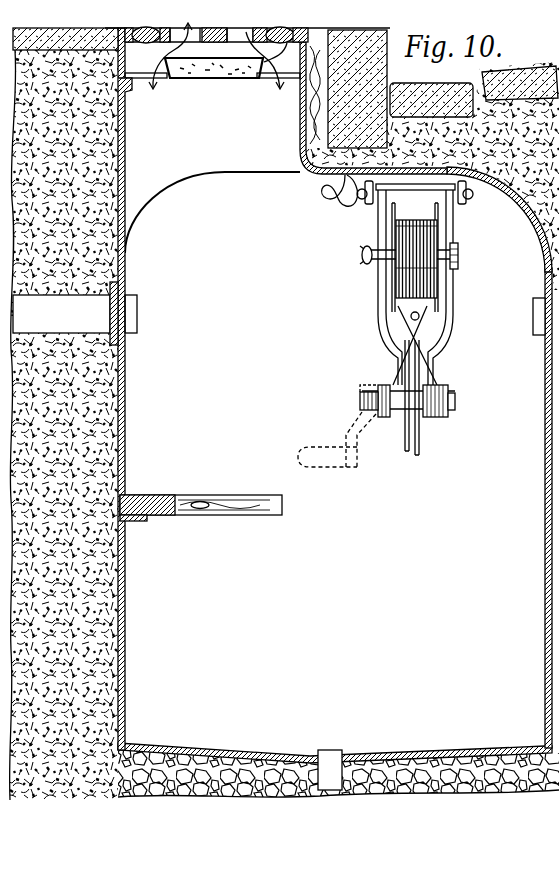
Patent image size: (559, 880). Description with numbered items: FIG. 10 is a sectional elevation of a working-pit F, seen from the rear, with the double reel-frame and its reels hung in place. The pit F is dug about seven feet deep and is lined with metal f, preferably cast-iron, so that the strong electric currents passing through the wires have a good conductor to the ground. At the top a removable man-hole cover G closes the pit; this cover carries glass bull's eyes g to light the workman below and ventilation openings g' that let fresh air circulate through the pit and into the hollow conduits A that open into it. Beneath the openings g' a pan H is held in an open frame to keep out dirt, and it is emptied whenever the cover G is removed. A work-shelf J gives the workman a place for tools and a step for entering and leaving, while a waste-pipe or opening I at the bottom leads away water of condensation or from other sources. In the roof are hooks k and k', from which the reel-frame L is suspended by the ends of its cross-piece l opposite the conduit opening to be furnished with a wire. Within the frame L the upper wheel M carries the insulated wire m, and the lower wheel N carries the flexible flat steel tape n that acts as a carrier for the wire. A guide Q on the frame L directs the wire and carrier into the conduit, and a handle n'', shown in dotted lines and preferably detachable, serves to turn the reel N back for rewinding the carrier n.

The conduit A is at (533, 316).
The working-pit F is at (335, 402).
The metal lining f is at (124, 600).
The man-hole cover G is at (173, 48).
The ventilation opening g' is at (243, 48).
The glass bull's eye g is at (280, 32).
The pan H is at (214, 59).
The top block / shaft wall T is at (348, 77).
The waste-pipe I is at (330, 770).
The work-shelf J is at (242, 517).
The hook k' is at (325, 190).
The hook k is at (411, 205).
The cross-piece l is at (415, 186).
The reel-frame L is at (450, 334).
The insulated wire m is at (415, 255).
The upper wheel M is at (441, 278).
The guide Q is at (416, 345).
The flexible flat tape n is at (412, 406).
The lower wheel N is at (418, 432).
The handle n'' is at (338, 426).